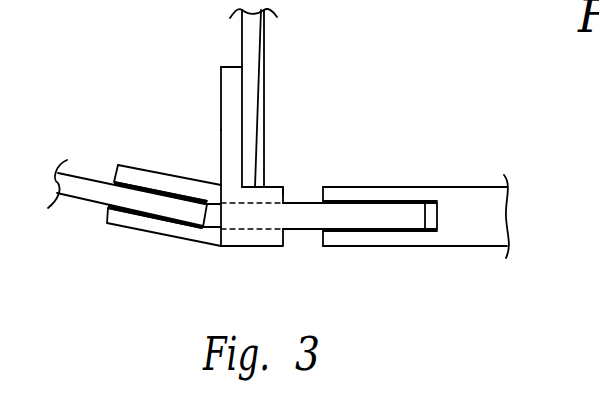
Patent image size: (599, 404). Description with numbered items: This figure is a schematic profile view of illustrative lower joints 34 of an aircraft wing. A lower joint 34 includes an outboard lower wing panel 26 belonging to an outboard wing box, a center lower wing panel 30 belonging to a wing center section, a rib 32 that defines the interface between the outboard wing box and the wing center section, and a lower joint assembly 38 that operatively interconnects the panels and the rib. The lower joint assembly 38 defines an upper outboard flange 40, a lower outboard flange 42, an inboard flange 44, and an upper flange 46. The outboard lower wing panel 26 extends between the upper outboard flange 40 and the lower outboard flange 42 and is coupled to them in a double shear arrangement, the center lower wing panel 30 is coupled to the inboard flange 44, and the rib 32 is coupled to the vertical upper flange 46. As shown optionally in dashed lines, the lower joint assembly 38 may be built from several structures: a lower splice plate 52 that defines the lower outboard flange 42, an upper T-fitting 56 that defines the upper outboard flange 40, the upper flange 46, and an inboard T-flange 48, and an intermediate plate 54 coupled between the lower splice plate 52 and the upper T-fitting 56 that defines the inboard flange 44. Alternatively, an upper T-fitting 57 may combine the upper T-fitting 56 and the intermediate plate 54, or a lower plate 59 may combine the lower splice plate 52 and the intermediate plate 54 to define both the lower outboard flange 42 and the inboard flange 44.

The outboard lower wing panel 26 is at (82, 199).
The center lower wing panel 30 is at (460, 247).
The rib 32 is at (264, 88).
The lower joint 34 is at (396, 114).
The lower joint assembly 38 is at (237, 135).
The upper outboard flange 40 is at (141, 163).
The lower outboard flange 42 is at (135, 229).
The inboard flange 44 is at (305, 231).
The upper flange 46 is at (221, 80).
The inboard T-flange 48 is at (277, 187).
The lower splice plate 52 is at (188, 249).
The intermediate plate 54 is at (306, 196).
The upper T-fitting 56 is at (179, 168).
The upper T-fitting 57 is at (306, 234).
The lower plate 59 is at (292, 239).